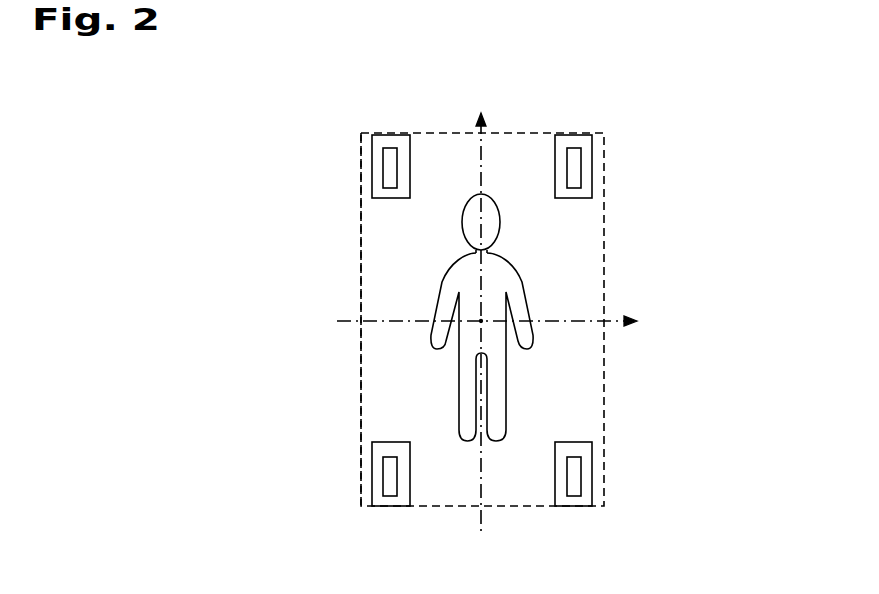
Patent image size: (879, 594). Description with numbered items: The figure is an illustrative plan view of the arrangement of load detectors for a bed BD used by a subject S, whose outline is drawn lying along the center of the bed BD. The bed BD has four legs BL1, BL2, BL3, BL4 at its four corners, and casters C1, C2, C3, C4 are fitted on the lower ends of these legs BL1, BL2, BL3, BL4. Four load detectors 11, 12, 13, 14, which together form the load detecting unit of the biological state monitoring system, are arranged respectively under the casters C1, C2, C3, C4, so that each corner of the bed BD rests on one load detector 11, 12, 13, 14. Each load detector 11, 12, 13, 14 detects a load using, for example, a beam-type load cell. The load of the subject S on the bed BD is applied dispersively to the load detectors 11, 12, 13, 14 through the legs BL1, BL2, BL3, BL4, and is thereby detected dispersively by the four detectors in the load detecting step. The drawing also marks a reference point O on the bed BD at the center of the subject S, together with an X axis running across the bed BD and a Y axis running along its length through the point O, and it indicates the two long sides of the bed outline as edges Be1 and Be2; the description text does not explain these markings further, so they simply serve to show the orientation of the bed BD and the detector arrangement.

The load detector 11 is at (588, 452).
The load detector 12 is at (380, 452).
The load detector 13 is at (378, 188).
The load detector 14 is at (585, 188).
The leg BL1 is at (578, 477).
The leg BL2 is at (390, 477).
The leg BL3 is at (392, 160).
The leg BL4 is at (575, 170).
The caster C1 is at (656, 485).
The caster C2 is at (309, 491).
The caster C3 is at (311, 167).
The caster C4 is at (657, 167).
The subject S is at (518, 280).
The origin of body coordinate system O is at (481, 321).
The X axis X is at (505, 322).
The Y axis Y is at (480, 305).
The first body edge (right side) Be1 is at (605, 367).
The second body edge (left side) Be2 is at (360, 371).
The bed BD is at (643, 418).